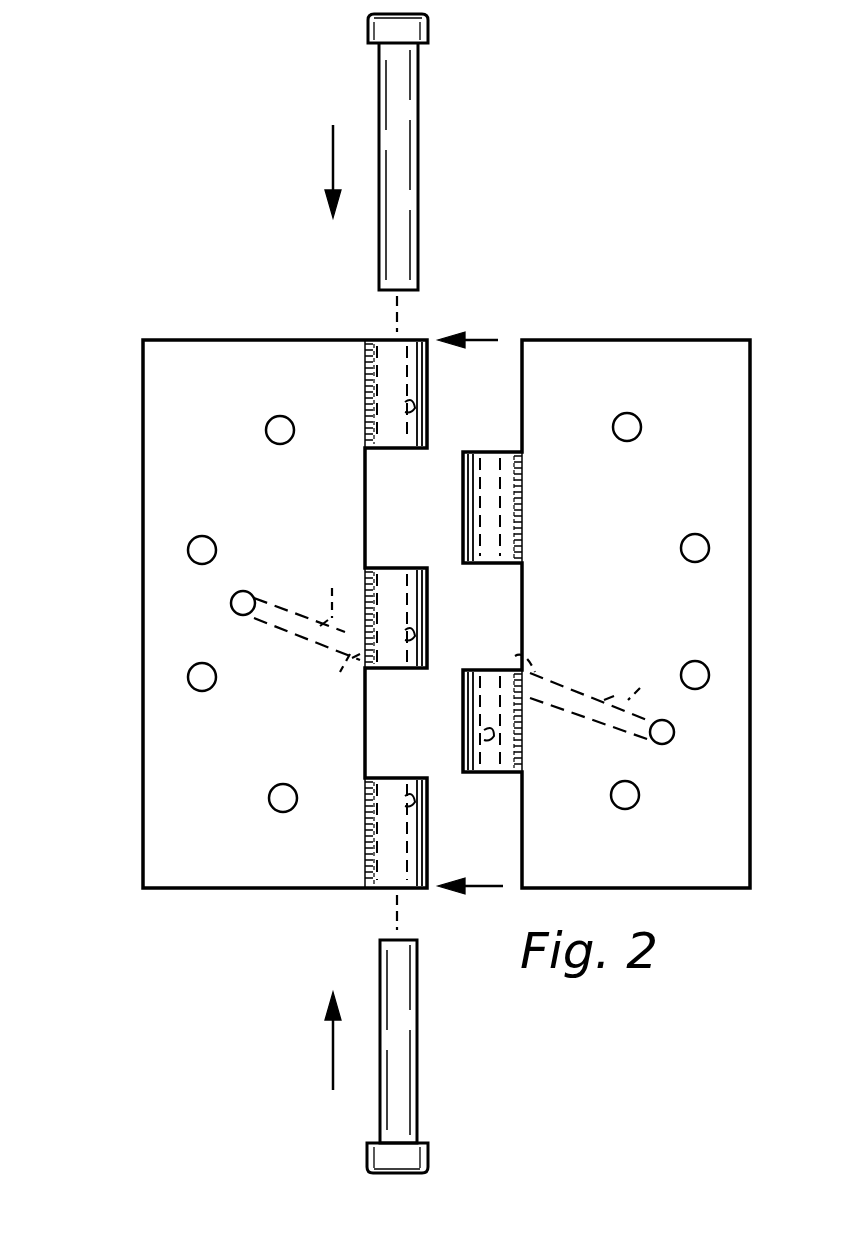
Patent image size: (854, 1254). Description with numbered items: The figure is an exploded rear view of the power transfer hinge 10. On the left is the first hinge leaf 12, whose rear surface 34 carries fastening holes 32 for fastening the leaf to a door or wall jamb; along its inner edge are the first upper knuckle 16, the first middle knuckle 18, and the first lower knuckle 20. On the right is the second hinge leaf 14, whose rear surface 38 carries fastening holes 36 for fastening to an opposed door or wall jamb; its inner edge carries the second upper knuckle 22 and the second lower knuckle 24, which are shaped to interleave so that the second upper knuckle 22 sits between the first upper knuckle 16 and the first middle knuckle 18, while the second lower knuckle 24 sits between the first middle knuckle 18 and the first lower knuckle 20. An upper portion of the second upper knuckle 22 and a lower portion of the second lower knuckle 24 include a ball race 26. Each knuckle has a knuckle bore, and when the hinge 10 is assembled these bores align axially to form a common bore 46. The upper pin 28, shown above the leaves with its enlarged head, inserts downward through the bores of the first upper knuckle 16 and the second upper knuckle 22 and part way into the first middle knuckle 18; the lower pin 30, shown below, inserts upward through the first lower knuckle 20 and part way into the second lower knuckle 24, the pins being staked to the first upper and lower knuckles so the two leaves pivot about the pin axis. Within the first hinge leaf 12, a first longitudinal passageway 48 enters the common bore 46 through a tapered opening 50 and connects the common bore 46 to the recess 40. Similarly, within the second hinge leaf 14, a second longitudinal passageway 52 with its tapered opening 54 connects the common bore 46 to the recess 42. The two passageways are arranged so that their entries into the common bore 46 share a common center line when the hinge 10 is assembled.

The power transfer hinge 10 is at (290, 940).
The first hinge leaf 12 is at (272, 340).
The second hinge leaf 14 is at (665, 340).
The first upper knuckle 16 is at (428, 398).
The first middle knuckle 18 is at (455, 580).
The first lower knuckle 20 is at (428, 850).
The second upper knuckle 22 is at (462, 526).
The second lower knuckle 24 is at (462, 718).
The ball race 26 is at (462, 476).
The upper pin 28 is at (418, 170).
The lower pin 30 is at (445, 1062).
The fastening holes 32 is at (268, 440).
The rear surface 34 is at (232, 824).
The fastening holes 36 is at (637, 438).
The rear surface 38 is at (695, 854).
The recess 40 is at (232, 612).
The recess 42 is at (650, 742).
The common bore 46 is at (422, 405).
The first longitudinal passageway 48 is at (311, 595).
The tapered opening 50 is at (334, 679).
The second longitudinal passageway 52 is at (620, 676).
The tapered opening 54 is at (544, 653).